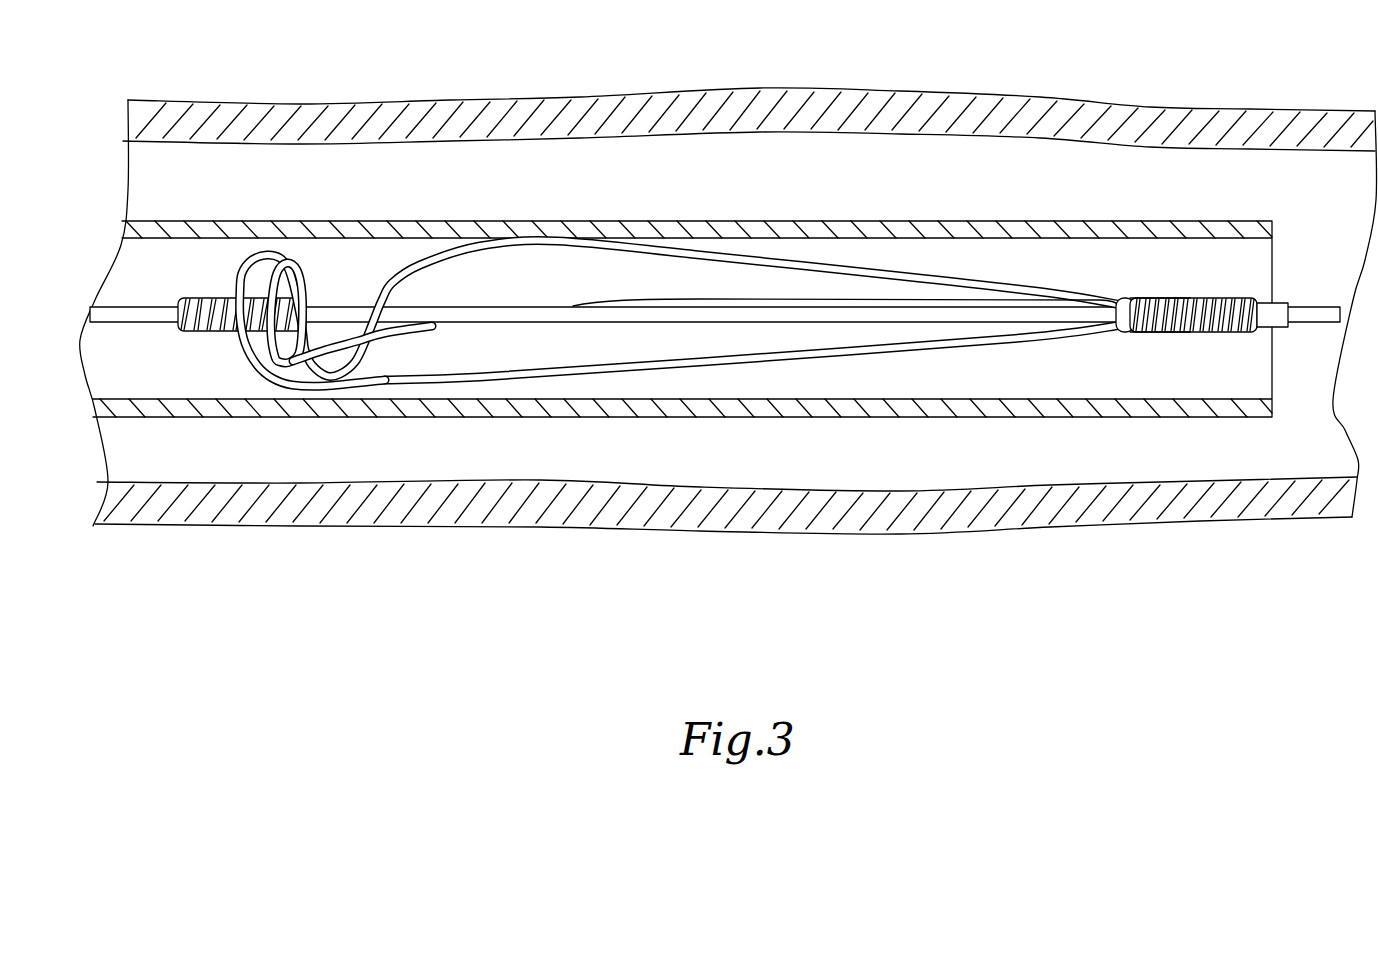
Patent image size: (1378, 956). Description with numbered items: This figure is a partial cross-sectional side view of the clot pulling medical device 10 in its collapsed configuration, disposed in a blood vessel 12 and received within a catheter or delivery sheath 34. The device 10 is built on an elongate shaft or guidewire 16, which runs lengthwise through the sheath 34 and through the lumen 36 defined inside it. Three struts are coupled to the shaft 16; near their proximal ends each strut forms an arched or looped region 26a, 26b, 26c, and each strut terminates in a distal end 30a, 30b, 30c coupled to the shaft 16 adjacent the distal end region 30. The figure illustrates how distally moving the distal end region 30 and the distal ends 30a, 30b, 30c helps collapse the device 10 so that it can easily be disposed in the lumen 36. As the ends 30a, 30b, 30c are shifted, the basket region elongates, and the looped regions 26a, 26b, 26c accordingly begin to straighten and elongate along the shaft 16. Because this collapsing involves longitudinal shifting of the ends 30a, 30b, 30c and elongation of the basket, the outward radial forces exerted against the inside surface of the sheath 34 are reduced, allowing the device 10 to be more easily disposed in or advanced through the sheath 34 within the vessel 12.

The clot pulling medical device 10 is at (692, 318).
The blood vessel 12 is at (815, 105).
The elongate shaft or guidewire 16 is at (127, 312).
The arched or looped region 26a is at (423, 323).
The arched or looped region 26b is at (557, 245).
The arched or looped region 26c is at (579, 370).
The distal end region 30 is at (1198, 328).
The distal end 30a is at (1192, 333).
The distal end 30b is at (1152, 297).
The distal end 30c is at (1217, 303).
The delivery sheath 34 is at (408, 218).
The lumen 36 is at (993, 258).